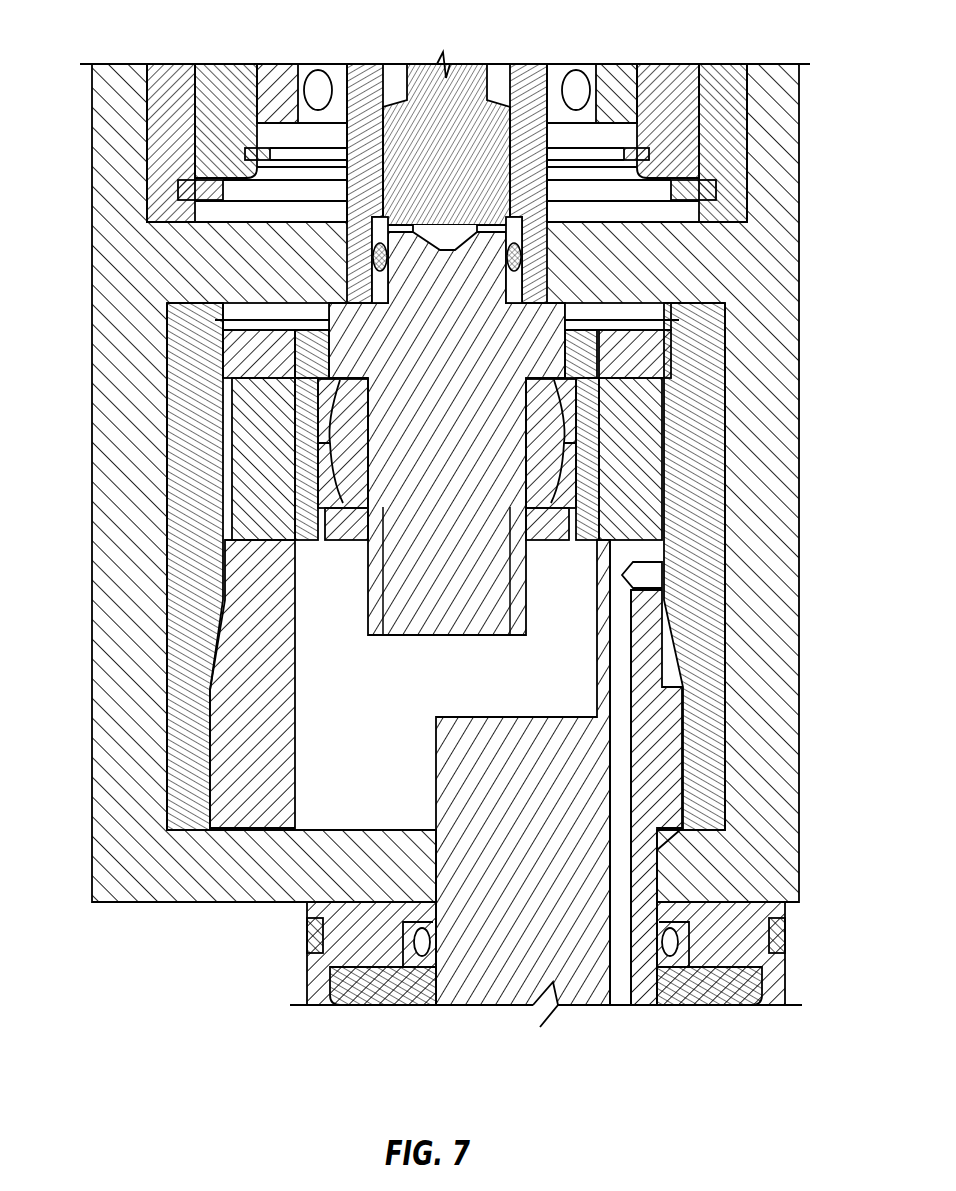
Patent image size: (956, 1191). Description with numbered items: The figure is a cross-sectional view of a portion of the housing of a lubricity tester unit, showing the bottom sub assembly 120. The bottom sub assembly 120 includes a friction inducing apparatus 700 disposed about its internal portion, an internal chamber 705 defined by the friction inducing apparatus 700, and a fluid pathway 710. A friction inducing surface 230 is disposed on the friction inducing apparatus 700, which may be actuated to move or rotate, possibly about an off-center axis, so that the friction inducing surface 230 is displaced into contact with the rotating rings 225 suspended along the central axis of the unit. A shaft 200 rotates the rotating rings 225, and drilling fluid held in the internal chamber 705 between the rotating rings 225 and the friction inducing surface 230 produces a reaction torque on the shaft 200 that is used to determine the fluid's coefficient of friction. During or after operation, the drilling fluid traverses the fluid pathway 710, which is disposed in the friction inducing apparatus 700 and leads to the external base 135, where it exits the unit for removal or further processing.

The bottom sub assembly 120 is at (799, 567).
The external base 135 is at (745, 955).
The shaft 200 is at (463, 78).
The rotating rings 225 is at (565, 418).
The friction inducing surface 230 is at (240, 465).
The friction inducing apparatus 700 is at (282, 748).
The internal chamber 705 is at (405, 704).
The fluid pathway 710 is at (618, 686).